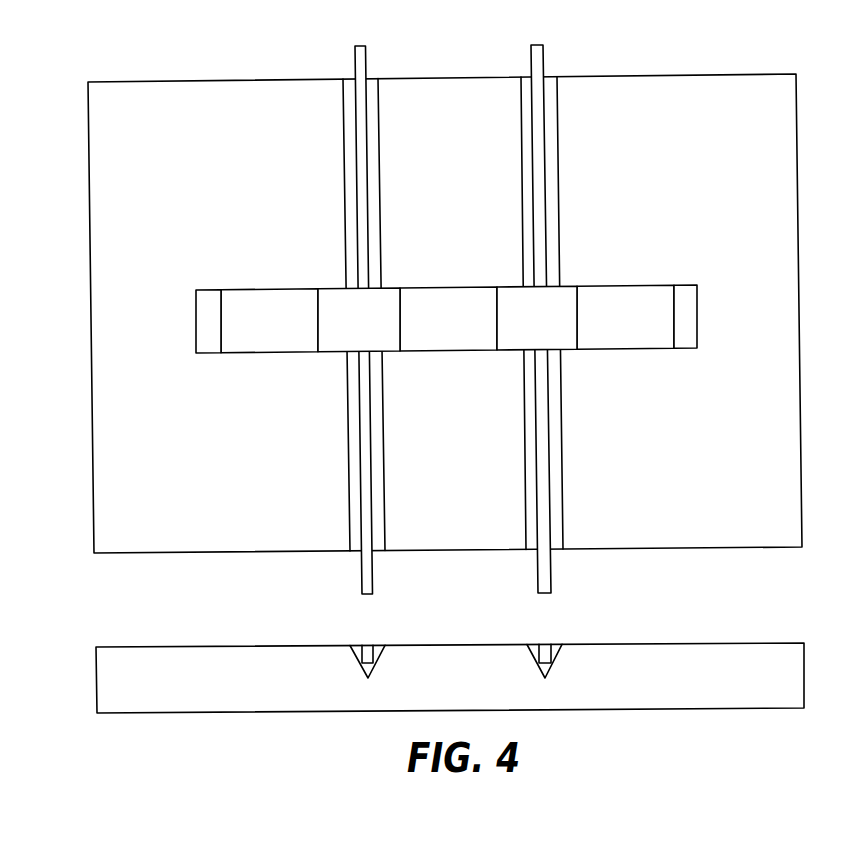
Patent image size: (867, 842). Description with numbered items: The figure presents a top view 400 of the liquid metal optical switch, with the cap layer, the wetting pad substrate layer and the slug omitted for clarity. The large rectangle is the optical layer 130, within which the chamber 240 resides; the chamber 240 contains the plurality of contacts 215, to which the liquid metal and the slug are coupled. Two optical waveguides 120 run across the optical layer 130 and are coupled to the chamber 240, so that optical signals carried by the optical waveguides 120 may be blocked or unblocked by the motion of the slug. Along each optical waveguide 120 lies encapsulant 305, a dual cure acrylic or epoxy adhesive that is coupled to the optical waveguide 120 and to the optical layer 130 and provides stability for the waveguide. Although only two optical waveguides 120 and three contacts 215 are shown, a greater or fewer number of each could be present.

The top view 400 is at (93, 54).
The optical layer 130 is at (785, 422).
The optical waveguide 120 is at (355, 62).
The encapsulant 305 is at (346, 120).
The plurality of contacts 215 is at (273, 297).
The chamber 240 is at (210, 297).